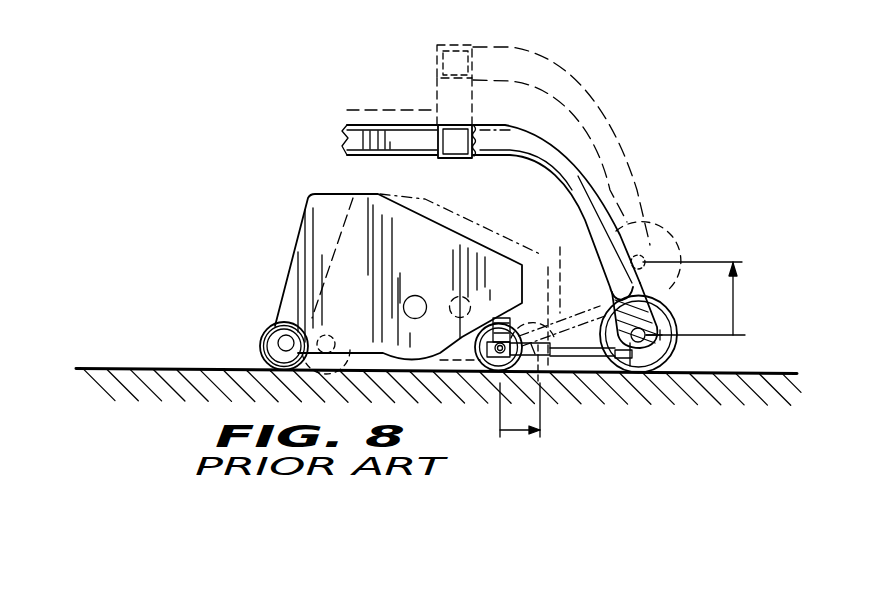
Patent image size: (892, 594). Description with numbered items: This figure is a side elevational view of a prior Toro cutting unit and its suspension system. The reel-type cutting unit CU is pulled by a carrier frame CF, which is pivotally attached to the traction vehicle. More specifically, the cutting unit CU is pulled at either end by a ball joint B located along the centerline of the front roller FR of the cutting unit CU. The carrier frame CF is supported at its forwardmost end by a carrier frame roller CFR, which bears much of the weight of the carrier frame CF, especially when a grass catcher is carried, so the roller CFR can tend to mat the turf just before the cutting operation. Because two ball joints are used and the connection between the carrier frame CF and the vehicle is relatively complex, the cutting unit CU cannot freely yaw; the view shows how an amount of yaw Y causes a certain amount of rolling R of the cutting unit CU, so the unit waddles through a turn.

The cutting unit CU is at (322, 210).
The carrier frame CF is at (545, 147).
The carrier frame roller CFR is at (667, 345).
The front roller FR is at (518, 328).
The ball joint B is at (500, 353).
The rolling R is at (733, 298).
The yaw Y is at (511, 432).